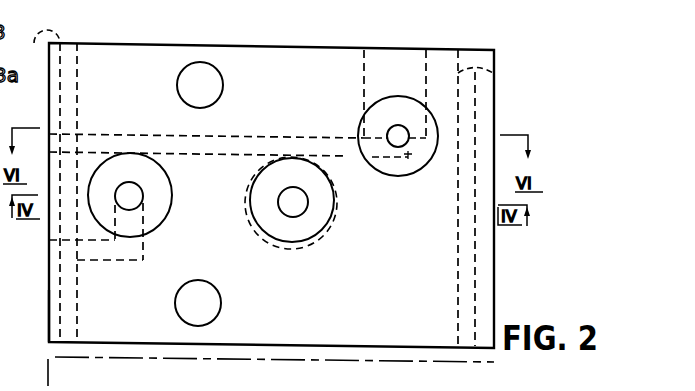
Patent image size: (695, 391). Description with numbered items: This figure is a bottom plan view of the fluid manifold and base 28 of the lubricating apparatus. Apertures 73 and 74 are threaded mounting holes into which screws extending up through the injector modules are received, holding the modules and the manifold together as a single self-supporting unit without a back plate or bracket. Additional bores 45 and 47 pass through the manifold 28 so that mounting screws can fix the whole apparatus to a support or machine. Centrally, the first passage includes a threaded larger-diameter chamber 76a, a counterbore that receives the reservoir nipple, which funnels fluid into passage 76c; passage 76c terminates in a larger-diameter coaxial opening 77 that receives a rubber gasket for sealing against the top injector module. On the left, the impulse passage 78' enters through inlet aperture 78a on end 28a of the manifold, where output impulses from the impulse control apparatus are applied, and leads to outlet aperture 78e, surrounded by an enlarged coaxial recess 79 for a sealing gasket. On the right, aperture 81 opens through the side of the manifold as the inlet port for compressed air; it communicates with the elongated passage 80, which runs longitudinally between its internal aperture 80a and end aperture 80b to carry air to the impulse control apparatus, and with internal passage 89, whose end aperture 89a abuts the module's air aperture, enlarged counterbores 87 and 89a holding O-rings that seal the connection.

The fluid manifold and base 28 is at (510, 72).
The end of base/manifold 28a is at (48, 306).
The bore 45 is at (47, 185).
The bore 47 is at (497, 77).
The threaded mounting hole 73 is at (197, 326).
The threaded mounting hole 74 is at (208, 63).
The larger-diameter cylindrical chamber 76a is at (303, 204).
The passage 76c is at (322, 226).
The larger-diameter coaxial opening 77 is at (280, 229).
The slot 78' is at (110, 247).
The inlet aperture 78a is at (59, 245).
The outlet aperture 78e is at (141, 193).
The enlarged coaxial recess 79 is at (156, 216).
The elongated passage 80 is at (184, 142).
The internal aperture 80a is at (431, 146).
The end aperture 80b is at (106, 134).
The aperture 81 is at (416, 99).
The enlarged coaxial surface counterbore 87 is at (408, 160).
The internal passage 89 is at (387, 131).
The end aperture 89a is at (432, 139).